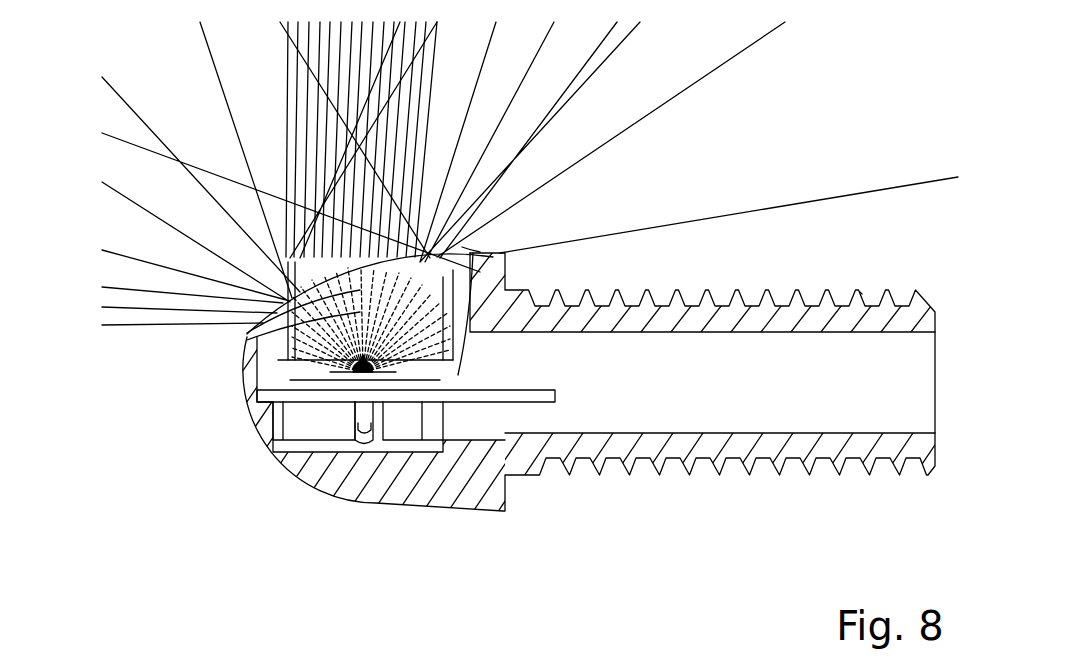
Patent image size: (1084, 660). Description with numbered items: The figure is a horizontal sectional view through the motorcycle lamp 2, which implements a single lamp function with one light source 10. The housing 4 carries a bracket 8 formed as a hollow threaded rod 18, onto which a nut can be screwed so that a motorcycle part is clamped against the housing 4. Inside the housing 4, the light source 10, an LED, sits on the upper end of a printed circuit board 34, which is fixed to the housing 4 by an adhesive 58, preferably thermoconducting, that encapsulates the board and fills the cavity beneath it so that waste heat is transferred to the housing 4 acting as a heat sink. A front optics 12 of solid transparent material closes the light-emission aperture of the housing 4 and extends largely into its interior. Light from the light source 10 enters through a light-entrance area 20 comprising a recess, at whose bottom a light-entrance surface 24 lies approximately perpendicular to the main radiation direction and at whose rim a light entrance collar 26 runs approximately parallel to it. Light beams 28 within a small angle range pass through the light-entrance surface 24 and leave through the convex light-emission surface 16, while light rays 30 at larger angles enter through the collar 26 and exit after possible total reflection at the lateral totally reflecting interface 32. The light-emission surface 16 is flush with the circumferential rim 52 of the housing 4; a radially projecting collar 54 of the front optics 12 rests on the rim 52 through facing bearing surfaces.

The motorcycle lamp 2 is at (763, 113).
The housing 4 is at (360, 488).
The bracket 8 is at (795, 503).
The light source 10 is at (380, 380).
The front optics 12 is at (290, 293).
The light-emission surface 16 is at (290, 300).
The threaded rod 18 is at (862, 293).
The light-entrance area 20 is at (340, 380).
The light-entrance surface 24 is at (430, 248).
The light entrance collar 26 is at (462, 247).
The light beams 28 is at (303, 380).
The light rays 30 is at (303, 380).
The lateral totally reflecting interface 32 is at (253, 367).
The printed circuit board 34 is at (480, 394).
The rim 52 is at (247, 340).
The collar 54 is at (247, 333).
The adhesive 58 is at (320, 400).